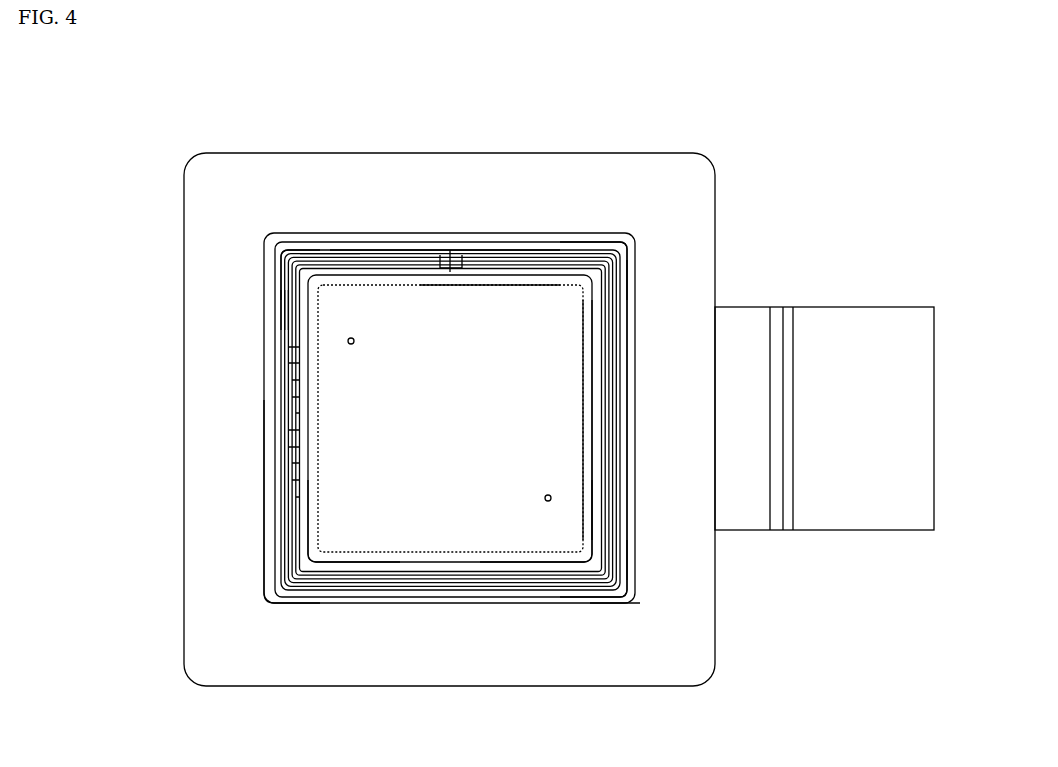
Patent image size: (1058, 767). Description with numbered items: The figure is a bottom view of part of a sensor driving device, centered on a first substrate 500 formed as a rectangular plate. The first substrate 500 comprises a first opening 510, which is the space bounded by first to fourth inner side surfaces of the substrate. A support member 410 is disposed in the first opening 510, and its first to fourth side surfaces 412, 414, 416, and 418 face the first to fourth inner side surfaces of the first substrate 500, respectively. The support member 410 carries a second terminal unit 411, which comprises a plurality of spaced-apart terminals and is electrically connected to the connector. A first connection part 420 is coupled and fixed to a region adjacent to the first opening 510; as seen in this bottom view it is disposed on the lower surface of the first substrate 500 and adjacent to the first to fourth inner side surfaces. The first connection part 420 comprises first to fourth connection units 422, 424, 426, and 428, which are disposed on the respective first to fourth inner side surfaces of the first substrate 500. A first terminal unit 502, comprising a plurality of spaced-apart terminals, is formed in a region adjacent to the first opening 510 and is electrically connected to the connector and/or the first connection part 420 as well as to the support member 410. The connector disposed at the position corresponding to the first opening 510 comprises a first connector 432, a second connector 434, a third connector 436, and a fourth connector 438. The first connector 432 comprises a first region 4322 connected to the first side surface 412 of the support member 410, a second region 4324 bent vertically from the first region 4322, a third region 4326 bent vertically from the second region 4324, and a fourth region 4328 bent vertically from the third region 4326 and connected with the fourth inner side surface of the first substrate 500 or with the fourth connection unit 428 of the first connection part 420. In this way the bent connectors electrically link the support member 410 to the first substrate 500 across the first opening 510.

The first substrate 500 is at (697, 165).
The first terminal unit 502 is at (460, 233).
The first opening 510 is at (583, 247).
The support member 410 is at (453, 527).
The second terminal unit 411 is at (440, 283).
The first side surface 412 is at (493, 285).
The second side surface 414 is at (588, 332).
The third side surface 416 is at (555, 553).
The fourth side surface 418 is at (313, 535).
The first connection part 420 is at (552, 237).
The first connection unit 422 is at (370, 237).
The second connection unit 424 is at (640, 273).
The third connection unit 426 is at (598, 600).
The fourth connection unit 428 is at (267, 553).
The first connector 432 is at (288, 247).
The second connector 434 is at (640, 247).
The third connector 436 is at (622, 588).
The fourth connector 438 is at (270, 597).
The first region 4322 is at (440, 245).
The second region 4324 is at (318, 247).
The third region 4326 is at (282, 303).
The fourth region 4328 is at (277, 335).